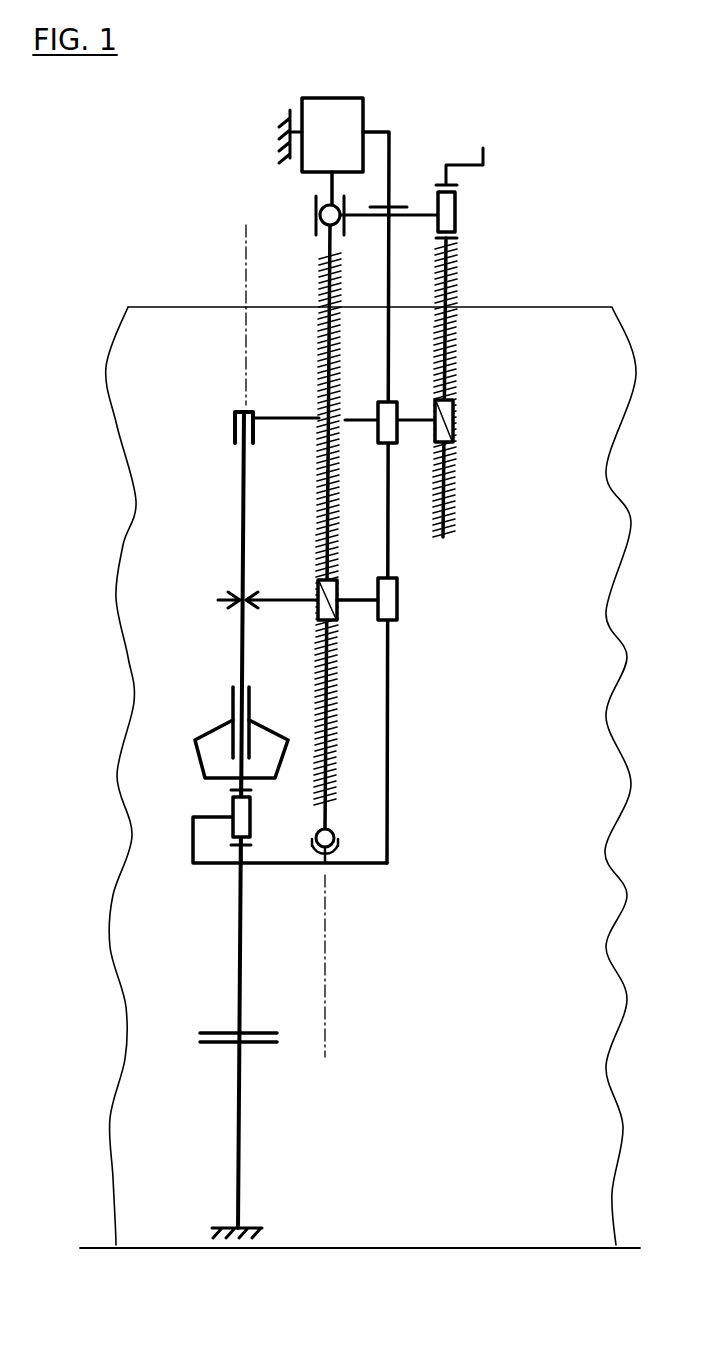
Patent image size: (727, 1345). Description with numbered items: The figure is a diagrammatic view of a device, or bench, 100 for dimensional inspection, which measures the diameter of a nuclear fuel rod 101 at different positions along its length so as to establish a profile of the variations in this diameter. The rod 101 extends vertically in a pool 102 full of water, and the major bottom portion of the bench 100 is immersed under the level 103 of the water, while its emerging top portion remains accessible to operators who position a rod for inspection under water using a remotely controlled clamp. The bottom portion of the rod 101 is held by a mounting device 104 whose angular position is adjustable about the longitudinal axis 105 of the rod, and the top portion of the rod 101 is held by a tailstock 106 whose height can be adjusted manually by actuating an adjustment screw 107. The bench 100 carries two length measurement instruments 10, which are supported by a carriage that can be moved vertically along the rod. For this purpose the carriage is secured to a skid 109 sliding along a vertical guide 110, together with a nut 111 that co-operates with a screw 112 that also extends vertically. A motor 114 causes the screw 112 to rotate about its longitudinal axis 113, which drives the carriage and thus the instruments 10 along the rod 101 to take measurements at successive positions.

The length measurement instruments 10 is at (224, 630).
The device for dimensional inspection 100 is at (122, 709).
The nuclear fuel rod 101 is at (240, 497).
The pool 102 is at (488, 1127).
The level of the water 103 is at (559, 299).
The mounting device 104 is at (197, 740).
The longitudinal axis of the rod 105 is at (246, 258).
The tailstock 106 is at (233, 428).
The adjustment screw 107 is at (452, 373).
The skid 109 is at (397, 605).
The vertical guide 110 is at (388, 552).
The nut 111 is at (338, 608).
The screw 112 is at (335, 742).
The longitudinal axis of the screw 113 is at (325, 978).
The motor 114 is at (352, 149).